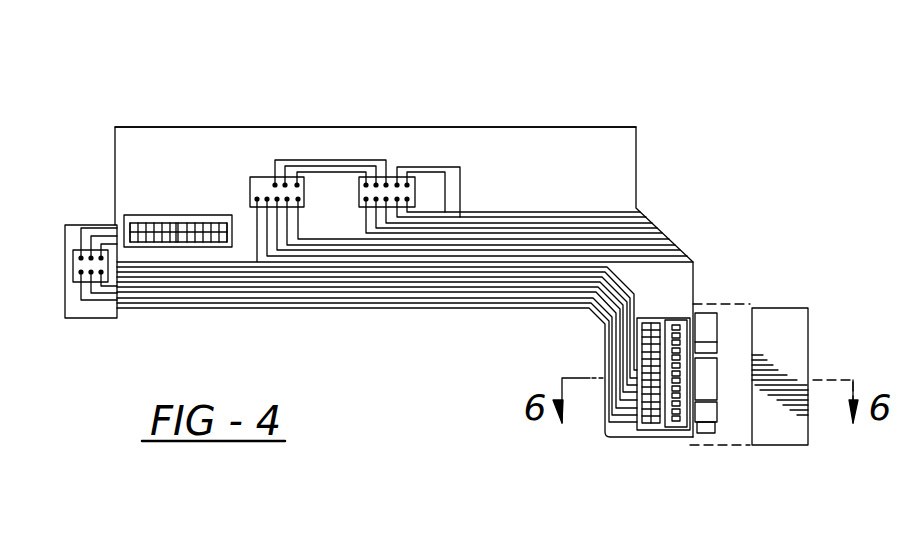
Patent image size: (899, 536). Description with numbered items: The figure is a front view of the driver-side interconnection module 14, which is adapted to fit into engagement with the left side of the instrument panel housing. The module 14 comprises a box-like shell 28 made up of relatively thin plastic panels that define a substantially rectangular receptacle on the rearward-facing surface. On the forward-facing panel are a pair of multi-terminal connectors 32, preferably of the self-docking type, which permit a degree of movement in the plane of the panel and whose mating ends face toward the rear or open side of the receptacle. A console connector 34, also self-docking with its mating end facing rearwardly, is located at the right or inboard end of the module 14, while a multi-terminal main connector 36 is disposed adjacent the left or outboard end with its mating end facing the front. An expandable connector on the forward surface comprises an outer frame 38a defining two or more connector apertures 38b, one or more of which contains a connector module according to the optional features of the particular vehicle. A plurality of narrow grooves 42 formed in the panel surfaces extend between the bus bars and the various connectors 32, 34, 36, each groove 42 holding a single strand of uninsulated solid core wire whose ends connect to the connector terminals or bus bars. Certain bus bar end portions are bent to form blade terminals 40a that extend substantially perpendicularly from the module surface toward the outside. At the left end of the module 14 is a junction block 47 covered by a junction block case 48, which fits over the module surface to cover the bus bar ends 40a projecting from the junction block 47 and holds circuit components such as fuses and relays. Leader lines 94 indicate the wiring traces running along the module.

The driver-side interconnection module 14 is at (625, 122).
The box-like shell 28 is at (152, 205).
The multi-terminal connectors 32 is at (265, 183).
The console connector 34 is at (75, 282).
The main connector 36 is at (620, 432).
The outer frame 38a is at (180, 213).
The connector apertures 38b is at (207, 243).
The blade terminals 40a is at (707, 322).
The grooves 42 is at (618, 218).
The junction block 47 is at (783, 278).
The junction block case 48 is at (798, 340).
The conductive traces 94 is at (450, 255).